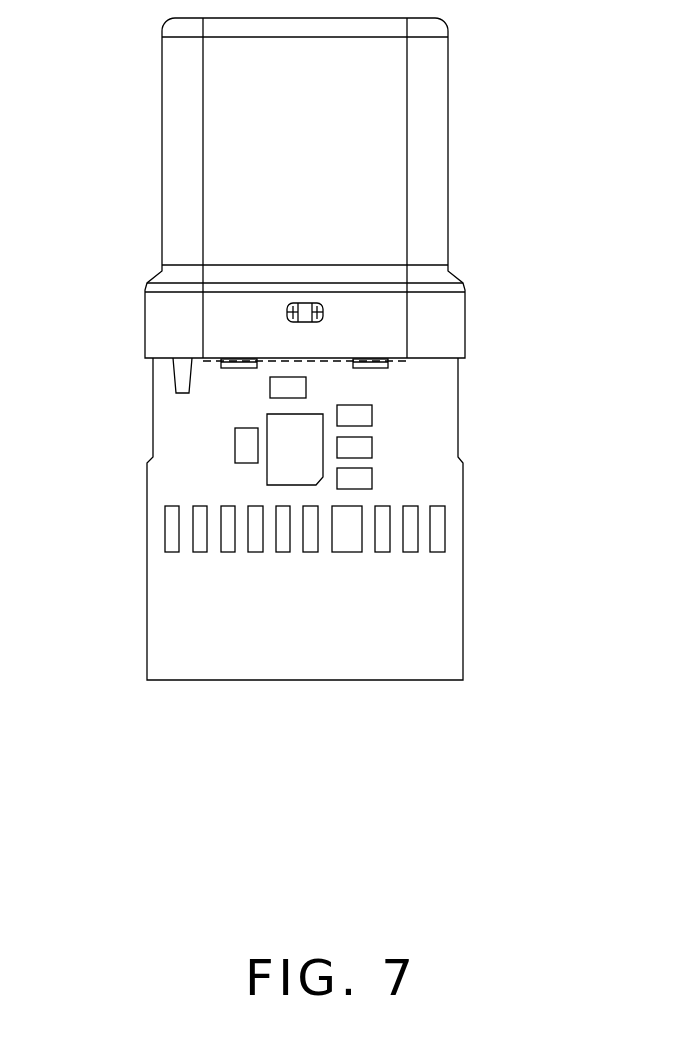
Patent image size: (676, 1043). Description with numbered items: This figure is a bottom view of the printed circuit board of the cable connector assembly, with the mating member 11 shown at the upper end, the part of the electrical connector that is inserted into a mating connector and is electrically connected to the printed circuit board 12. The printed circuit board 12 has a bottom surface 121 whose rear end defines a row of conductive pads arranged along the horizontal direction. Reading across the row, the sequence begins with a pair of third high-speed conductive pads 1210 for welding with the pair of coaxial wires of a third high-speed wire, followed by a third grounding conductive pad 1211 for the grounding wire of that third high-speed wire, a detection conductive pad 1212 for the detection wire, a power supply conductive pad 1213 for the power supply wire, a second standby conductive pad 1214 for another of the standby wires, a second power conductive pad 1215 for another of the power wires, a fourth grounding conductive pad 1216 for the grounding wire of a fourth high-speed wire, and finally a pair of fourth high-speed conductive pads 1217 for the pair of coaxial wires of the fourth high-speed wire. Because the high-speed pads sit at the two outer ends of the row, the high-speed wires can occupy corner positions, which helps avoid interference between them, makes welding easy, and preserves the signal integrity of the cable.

The mating member 11 is at (385, 142).
The printed circuit board 12 is at (359, 519).
The bottom surface 121 is at (423, 412).
The third high-speed conductive pads 1210 is at (203, 543).
The third grounding conductive pad 1211 is at (231, 543).
The detection conductive pad 1212 is at (258, 543).
The power supply conductive pad 1213 is at (286, 543).
The second standby conductive pad 1214 is at (313, 543).
The second power conductive pad 1215 is at (345, 543).
The fourth grounding conductive pad 1216 is at (382, 535).
The fourth high-speed conductive pads 1217 is at (408, 530).